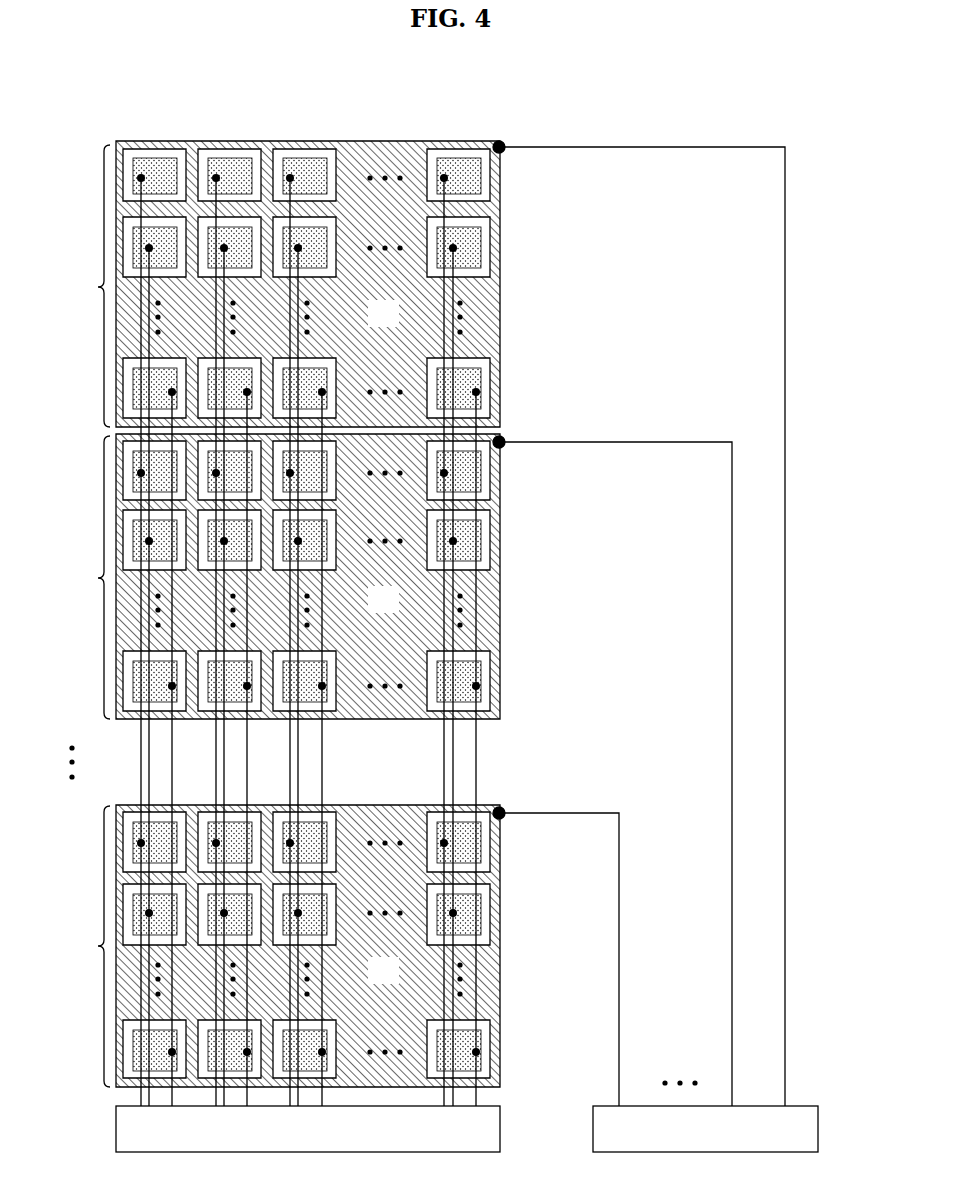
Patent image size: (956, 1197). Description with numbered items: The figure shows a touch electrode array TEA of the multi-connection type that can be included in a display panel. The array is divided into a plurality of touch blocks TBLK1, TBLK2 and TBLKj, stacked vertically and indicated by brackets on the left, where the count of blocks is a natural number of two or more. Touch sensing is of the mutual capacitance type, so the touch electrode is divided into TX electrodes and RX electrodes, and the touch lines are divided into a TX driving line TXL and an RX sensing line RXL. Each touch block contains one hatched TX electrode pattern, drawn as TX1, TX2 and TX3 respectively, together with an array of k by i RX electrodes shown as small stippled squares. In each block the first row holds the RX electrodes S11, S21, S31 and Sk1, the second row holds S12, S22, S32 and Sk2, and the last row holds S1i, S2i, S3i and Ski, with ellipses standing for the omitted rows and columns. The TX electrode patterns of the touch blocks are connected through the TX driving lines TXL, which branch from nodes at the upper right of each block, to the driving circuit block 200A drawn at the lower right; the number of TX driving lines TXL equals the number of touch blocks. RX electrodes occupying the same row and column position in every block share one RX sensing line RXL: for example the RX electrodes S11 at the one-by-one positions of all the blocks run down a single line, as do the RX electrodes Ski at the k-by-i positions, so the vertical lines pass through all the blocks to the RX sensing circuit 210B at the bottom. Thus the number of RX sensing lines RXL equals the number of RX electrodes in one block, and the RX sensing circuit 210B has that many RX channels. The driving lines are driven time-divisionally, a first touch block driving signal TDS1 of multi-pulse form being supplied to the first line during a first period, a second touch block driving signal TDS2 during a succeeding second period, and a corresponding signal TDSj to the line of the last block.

The touch electrode array TEA is at (308, 576).
The TX electrode pattern TX1 is at (308, 284).
The TX electrode pattern TX2 is at (308, 576).
The TX electrode pattern TX3 is at (308, 946).
The TX driving line TXL is at (796, 968).
The RX sensing line RXL is at (500, 1100).
The first touch block driving signal TDS1 is at (545, 130).
The second touch block driving signal TDS2 is at (545, 425).
The touch block driving signal TDSj is at (545, 795).
The touch block TBLK1 is at (78, 286).
The touch block TBLK2 is at (76, 577).
The touch block TBLKj is at (69, 946).
The RX sensing circuit 210B is at (308, 1129).
The touch driving circuit 200A is at (705, 1129).
The RX electrode S11 is at (155, 510).
The RX electrode S21 is at (230, 510).
The RX electrode S31 is at (305, 510).
The RX electrode Sk1 is at (459, 510).
The RX electrode S12 is at (155, 581).
The RX electrode S22 is at (230, 581).
The RX electrode S32 is at (305, 581).
The RX electrode Sk2 is at (459, 581).
The RX electrode S1i is at (155, 719).
The RX electrode S2i is at (230, 719).
The RX electrode S3i is at (305, 719).
The RX electrode Ski is at (459, 719).